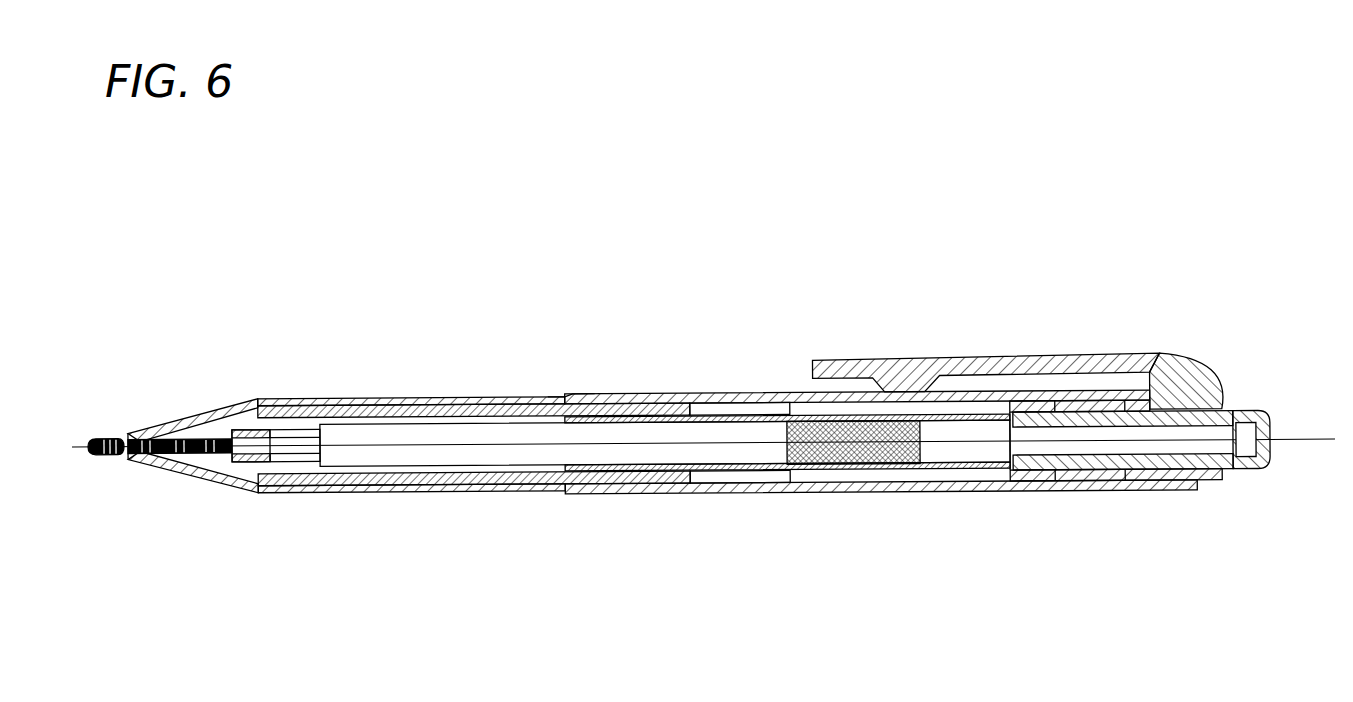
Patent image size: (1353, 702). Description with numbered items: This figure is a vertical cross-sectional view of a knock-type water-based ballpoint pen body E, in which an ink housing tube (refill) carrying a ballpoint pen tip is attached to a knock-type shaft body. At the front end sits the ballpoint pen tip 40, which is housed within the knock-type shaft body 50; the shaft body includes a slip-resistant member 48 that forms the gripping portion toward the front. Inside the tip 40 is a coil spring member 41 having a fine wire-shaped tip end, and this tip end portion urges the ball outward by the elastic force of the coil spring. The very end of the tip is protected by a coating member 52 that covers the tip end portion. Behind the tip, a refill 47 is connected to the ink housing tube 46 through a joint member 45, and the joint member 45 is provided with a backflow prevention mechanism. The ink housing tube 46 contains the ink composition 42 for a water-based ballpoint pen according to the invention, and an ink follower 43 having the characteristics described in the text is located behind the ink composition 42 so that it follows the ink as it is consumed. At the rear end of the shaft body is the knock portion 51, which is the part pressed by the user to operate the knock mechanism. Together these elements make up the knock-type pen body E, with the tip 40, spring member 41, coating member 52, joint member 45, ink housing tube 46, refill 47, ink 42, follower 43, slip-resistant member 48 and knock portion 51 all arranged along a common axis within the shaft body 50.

The knock-type water-based ballpoint pen body E is at (703, 415).
The ballpoint pen tip 40 is at (117, 432).
The coil spring member 41 is at (178, 418).
The ink composition 42 is at (688, 454).
The ink follower 43 is at (850, 467).
The joint member 45 is at (247, 454).
The ink housing tube 46 is at (417, 401).
The refill 47 is at (750, 393).
The slip-resistant member 48 is at (453, 491).
The knock-type shaft body 50 is at (581, 391).
The knock portion 51 is at (1258, 412).
The coating member 52 is at (93, 452).